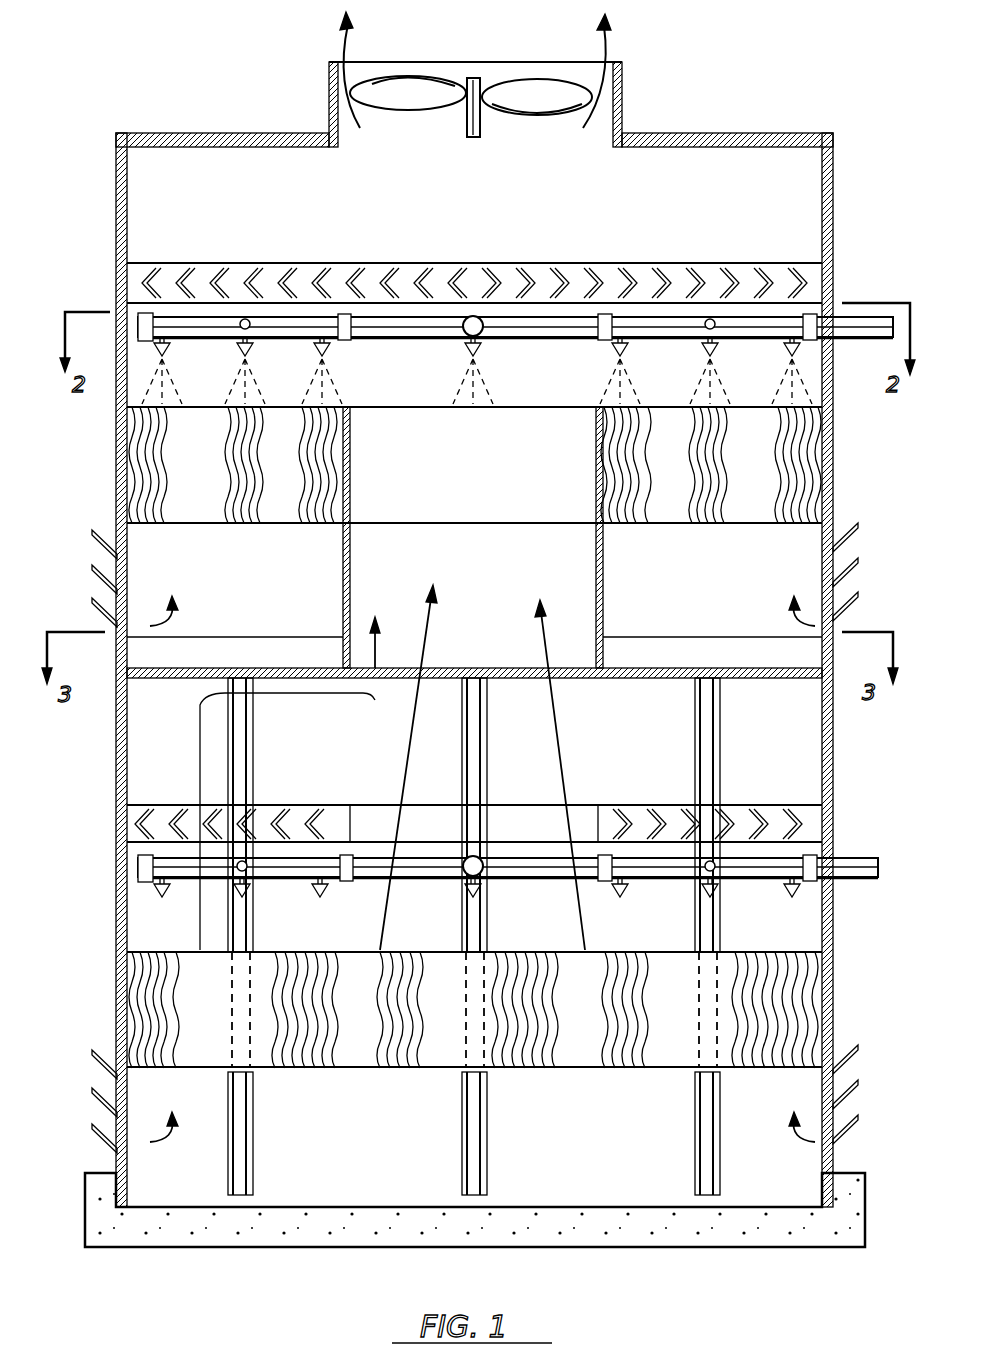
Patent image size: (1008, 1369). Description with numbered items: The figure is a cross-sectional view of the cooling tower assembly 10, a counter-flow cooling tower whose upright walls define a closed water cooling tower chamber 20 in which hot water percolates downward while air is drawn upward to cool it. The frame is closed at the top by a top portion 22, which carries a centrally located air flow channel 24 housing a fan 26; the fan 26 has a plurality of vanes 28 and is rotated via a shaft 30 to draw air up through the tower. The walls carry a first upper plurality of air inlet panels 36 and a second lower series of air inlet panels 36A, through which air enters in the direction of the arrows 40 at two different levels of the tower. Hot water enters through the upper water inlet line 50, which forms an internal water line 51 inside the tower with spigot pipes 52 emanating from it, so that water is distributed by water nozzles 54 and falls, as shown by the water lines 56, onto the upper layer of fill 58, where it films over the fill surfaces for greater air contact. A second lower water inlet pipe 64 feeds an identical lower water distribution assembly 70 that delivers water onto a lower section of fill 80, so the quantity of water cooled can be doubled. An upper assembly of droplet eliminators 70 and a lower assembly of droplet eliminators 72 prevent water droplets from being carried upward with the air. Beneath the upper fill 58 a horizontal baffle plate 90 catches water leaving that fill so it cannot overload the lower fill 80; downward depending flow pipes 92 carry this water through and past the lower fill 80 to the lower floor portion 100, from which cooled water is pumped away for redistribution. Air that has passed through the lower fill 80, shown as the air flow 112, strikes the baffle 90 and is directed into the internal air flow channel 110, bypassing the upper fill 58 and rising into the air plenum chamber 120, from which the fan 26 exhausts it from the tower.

The cooling tower assembly 10 is at (710, 100).
The water cooling tower chamber 20 is at (800, 246).
The top portion 22 is at (190, 137).
The air flow channel 24 is at (366, 56).
The fan 26 is at (483, 78).
The vanes 28 is at (556, 118).
The shaft 30 is at (466, 125).
The air inlet panels 36 is at (100, 590).
The lower air inlet panels 36A is at (100, 1068).
The air flow arrows 40 is at (110, 602).
The upper water inlet line 50 is at (855, 315).
The internal water line 51 is at (383, 340).
The spigot pipes 52 is at (468, 342).
The water nozzles 54 is at (486, 345).
The water lines 56 is at (233, 397).
The upper layer of fill 58 is at (130, 440).
The lower water inlet pipe 64 is at (850, 860).
The upper assembly of droplet eliminators 70 is at (270, 276).
The lower assembly of droplet eliminators 72 is at (655, 805).
The lower section of fill 80 is at (130, 978).
The baffle plate 90 is at (150, 680).
The flow pipes 92 is at (254, 772).
The lower floor portion 100 is at (142, 1202).
The internal air flow channel 110 is at (508, 572).
The air flow 112 is at (380, 650).
The air plenum chamber 120 is at (500, 241).